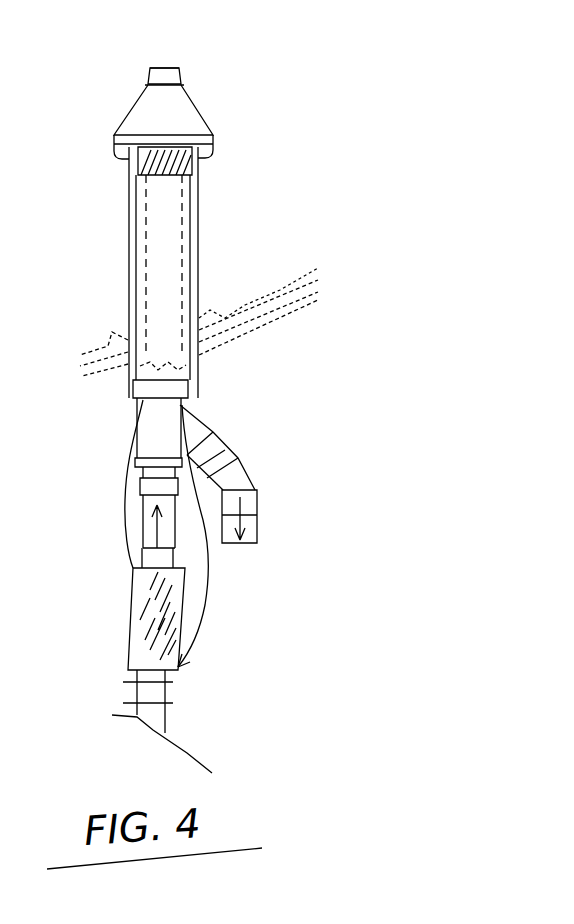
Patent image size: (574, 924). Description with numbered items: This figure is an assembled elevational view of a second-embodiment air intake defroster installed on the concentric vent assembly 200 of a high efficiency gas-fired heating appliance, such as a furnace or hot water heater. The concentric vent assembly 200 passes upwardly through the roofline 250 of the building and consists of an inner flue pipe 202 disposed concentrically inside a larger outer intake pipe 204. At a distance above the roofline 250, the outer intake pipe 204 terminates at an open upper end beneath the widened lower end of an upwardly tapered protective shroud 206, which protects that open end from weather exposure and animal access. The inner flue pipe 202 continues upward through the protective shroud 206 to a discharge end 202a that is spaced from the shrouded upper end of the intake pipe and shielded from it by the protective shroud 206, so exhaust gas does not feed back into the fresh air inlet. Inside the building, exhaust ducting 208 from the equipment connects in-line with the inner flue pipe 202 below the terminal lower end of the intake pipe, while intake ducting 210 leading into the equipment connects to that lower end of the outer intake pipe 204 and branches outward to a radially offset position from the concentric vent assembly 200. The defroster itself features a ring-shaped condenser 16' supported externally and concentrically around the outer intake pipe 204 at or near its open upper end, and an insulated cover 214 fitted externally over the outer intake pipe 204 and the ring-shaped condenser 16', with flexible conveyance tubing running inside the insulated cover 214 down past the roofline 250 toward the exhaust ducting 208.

The discharge end 202a is at (163, 66).
The inner flue pipe 202 is at (172, 77).
The protective shroud 206 is at (188, 115).
The ring-shaped condenser 16' is at (212, 158).
The concentric vent assembly 200 is at (170, 240).
The outer intake pipe 204 is at (173, 265).
The insulated cover 214 is at (126, 268).
The roofline 250 is at (293, 272).
The intake ducting 210 is at (247, 478).
The exhaust ducting 208 is at (150, 528).